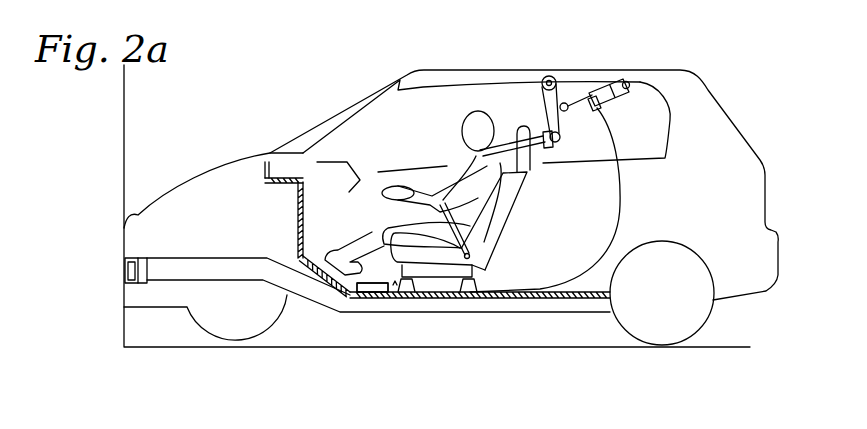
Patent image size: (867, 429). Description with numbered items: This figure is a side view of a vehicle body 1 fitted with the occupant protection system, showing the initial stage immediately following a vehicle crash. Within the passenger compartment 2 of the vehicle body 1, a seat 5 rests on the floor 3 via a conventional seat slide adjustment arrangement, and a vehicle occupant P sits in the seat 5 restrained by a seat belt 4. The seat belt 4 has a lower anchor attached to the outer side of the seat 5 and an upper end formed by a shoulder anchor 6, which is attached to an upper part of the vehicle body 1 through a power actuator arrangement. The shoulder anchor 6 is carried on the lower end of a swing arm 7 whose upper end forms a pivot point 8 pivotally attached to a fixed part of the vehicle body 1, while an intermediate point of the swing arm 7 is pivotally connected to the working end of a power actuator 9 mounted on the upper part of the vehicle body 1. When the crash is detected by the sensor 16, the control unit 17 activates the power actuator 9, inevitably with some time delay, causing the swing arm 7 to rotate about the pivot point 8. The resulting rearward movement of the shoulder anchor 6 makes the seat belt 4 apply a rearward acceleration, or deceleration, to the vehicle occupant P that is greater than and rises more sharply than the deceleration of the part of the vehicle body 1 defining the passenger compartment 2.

The vehicle body 1 is at (762, 185).
The passenger compartment 2 is at (422, 147).
The floor 3 is at (545, 299).
The seat belt 4 is at (512, 135).
The seat 5 is at (486, 246).
The shoulder anchor 6 is at (552, 148).
The swing arm 7 is at (559, 93).
The pivot point 8 is at (548, 76).
The power actuator 9 is at (628, 73).
The vehicle occupant P is at (477, 110).
The sensor 16 is at (375, 292).
The control unit 17 is at (382, 358).